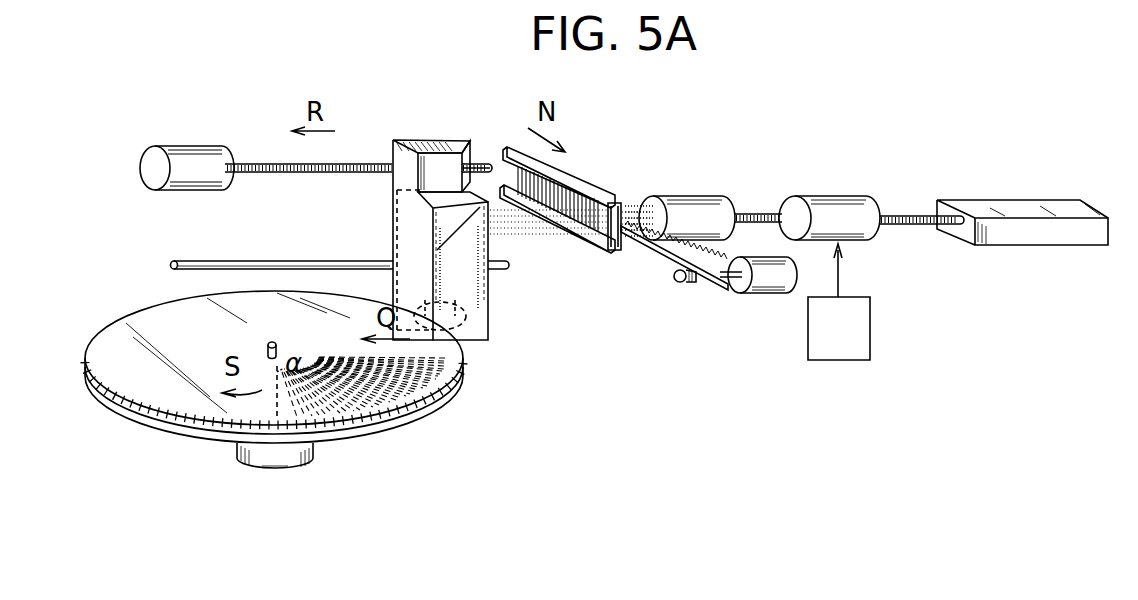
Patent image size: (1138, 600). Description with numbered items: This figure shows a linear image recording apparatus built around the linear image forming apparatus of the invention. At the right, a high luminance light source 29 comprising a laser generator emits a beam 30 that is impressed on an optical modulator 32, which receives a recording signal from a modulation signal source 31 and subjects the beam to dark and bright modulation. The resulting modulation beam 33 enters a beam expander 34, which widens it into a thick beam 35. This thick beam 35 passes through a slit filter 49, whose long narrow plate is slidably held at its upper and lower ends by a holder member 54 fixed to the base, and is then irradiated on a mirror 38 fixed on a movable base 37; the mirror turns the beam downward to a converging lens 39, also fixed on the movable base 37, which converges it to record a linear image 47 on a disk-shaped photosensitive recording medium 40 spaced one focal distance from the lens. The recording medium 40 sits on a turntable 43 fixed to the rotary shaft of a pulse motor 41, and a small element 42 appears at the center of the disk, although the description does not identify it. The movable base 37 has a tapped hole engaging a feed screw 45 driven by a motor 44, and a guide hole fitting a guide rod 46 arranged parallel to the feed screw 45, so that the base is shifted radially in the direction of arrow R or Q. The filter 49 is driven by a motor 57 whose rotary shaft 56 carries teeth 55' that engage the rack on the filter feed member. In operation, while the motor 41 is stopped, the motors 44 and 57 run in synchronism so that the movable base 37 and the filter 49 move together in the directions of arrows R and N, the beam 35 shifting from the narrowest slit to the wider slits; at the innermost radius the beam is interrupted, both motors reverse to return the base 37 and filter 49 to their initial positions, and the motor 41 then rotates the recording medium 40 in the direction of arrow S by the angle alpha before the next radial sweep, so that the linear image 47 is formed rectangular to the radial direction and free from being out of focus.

The light source 29 is at (1025, 246).
The beam 30 is at (904, 215).
The modulation signal source 31 is at (870, 327).
The optical modulator 32 is at (830, 199).
The modulation beam 33 is at (760, 214).
The beam expander 34 is at (710, 199).
The thick beam 35 is at (637, 213).
The movable base 37 is at (425, 145).
The mirror 38 is at (395, 210).
The converging lens 39 is at (462, 318).
The recording medium 40 is at (250, 414).
The motor 41 is at (272, 462).
The center pin 42 is at (282, 351).
The turntable 43 is at (412, 420).
The motor 44 is at (192, 152).
The feed screw 45 is at (357, 163).
The guide rod 46 is at (266, 260).
The linear image 47 is at (452, 376).
The filter 49 is at (614, 203).
The holder member 54 is at (571, 180).
The teeth 55' is at (674, 272).
The rotary shaft 56 is at (729, 271).
The motor 57 is at (764, 292).